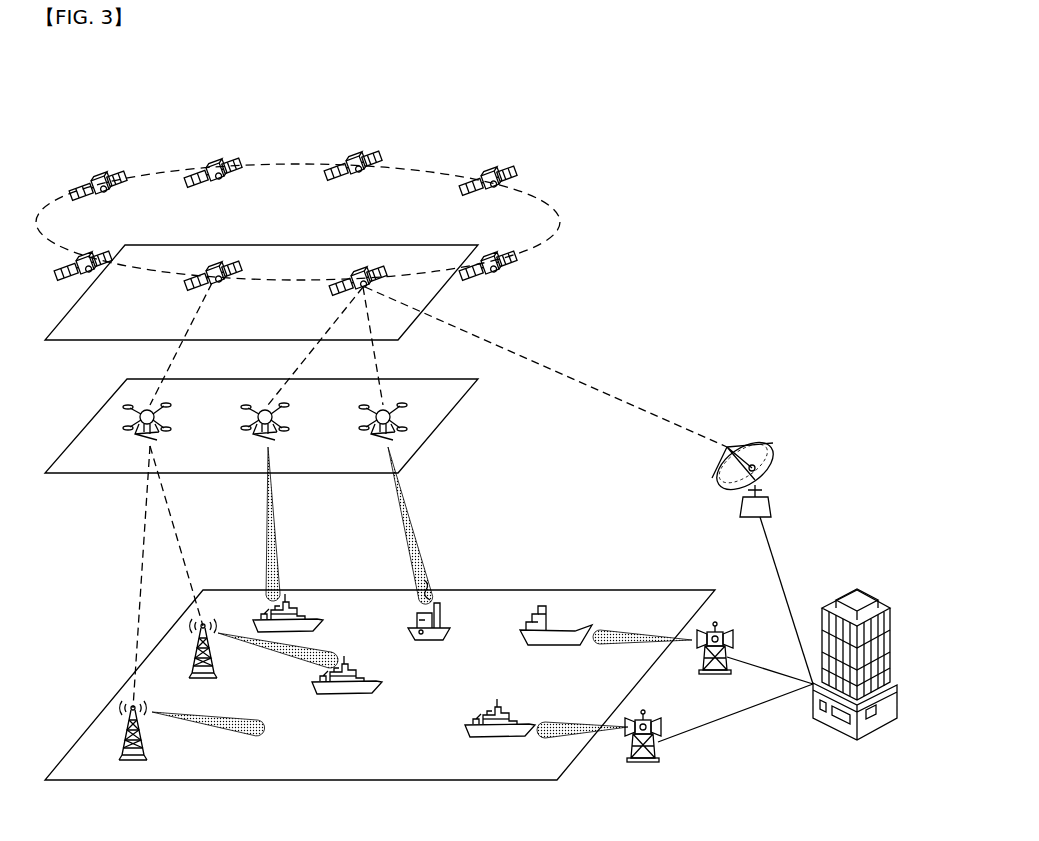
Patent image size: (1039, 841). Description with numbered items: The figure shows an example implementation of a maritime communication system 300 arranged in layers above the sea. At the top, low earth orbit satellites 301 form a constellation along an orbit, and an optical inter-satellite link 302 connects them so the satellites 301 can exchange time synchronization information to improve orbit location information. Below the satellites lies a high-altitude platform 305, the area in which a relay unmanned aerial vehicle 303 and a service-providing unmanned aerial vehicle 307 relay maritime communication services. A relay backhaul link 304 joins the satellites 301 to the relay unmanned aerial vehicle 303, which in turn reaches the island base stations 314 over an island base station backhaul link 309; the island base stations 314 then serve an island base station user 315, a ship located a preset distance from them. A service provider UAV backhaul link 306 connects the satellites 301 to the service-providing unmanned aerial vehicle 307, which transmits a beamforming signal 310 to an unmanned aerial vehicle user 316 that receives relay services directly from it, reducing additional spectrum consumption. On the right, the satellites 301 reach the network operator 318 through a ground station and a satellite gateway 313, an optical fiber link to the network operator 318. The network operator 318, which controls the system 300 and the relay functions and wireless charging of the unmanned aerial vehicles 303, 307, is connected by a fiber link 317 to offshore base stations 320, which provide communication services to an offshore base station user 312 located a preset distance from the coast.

The maritime communication system 300 is at (490, 103).
The satellite 301 is at (224, 268).
The optical inter-satellite link 302 is at (548, 208).
The relay unmanned aerial vehicle 303 is at (128, 410).
The relay backhaul link 304 is at (182, 356).
The high-altitude platform 305 is at (462, 402).
The service provider UAV backhaul link 306 is at (380, 366).
The service-providing unmanned aerial vehicle 307 is at (400, 432).
The island base station backhaul link 309 is at (177, 532).
The beamforming signal 310 is at (418, 533).
The offshore base station user 312 is at (537, 605).
The satellite gateway 313 is at (776, 553).
The island base station 314 is at (207, 675).
The island base station user 315 is at (362, 700).
The unmanned aerial vehicle user 316 is at (428, 644).
The fiber link 317 is at (755, 660).
The network operator 318 is at (866, 593).
The offshore base station 320 is at (648, 712).